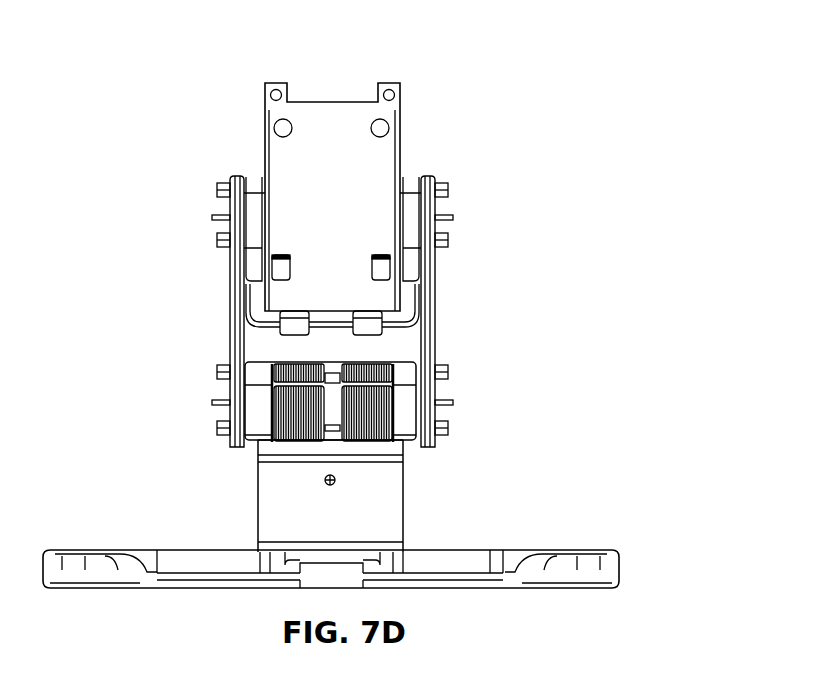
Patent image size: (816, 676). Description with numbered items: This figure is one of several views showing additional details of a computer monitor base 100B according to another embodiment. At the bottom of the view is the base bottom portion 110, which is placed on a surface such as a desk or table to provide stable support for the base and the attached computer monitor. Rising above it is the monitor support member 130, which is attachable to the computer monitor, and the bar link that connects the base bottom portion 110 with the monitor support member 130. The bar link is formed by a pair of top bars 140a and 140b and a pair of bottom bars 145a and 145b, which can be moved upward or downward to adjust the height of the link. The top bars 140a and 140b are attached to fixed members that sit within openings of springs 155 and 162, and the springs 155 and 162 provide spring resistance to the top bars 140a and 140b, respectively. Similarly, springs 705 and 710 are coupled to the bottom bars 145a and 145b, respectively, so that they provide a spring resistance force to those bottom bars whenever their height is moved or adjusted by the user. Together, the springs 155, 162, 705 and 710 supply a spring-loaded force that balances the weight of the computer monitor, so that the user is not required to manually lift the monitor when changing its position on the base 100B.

The computer monitor base 100B is at (196, 91).
The monitor support member 130 is at (401, 97).
The top bar 140a is at (229, 295).
The top bar 140b is at (434, 290).
The bottom bar 145a is at (226, 322).
The bottom bar 145b is at (434, 322).
The spring 155 is at (270, 362).
The spring 162 is at (400, 360).
The spring 705 is at (289, 445).
The spring 710 is at (375, 445).
The base bottom portion 110 is at (448, 572).